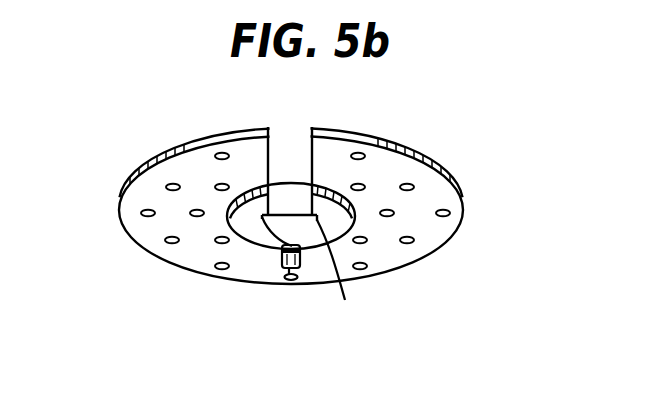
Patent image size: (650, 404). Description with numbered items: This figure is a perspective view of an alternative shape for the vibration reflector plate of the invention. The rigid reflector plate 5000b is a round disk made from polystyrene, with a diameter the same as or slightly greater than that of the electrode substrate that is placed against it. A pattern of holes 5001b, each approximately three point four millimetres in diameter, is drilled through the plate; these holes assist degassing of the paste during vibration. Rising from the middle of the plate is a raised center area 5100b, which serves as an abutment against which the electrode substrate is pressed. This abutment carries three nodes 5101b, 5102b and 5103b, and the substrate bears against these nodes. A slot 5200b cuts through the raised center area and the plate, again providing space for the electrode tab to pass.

The rigid reflector plate 5000b is at (427, 193).
The holes 5001b is at (360, 184).
The raised center area 5100b is at (243, 228).
The slot 5200b is at (290, 139).
The node 5101b is at (290, 280).
The node 5102b is at (300, 248).
The node 5103b is at (345, 300).